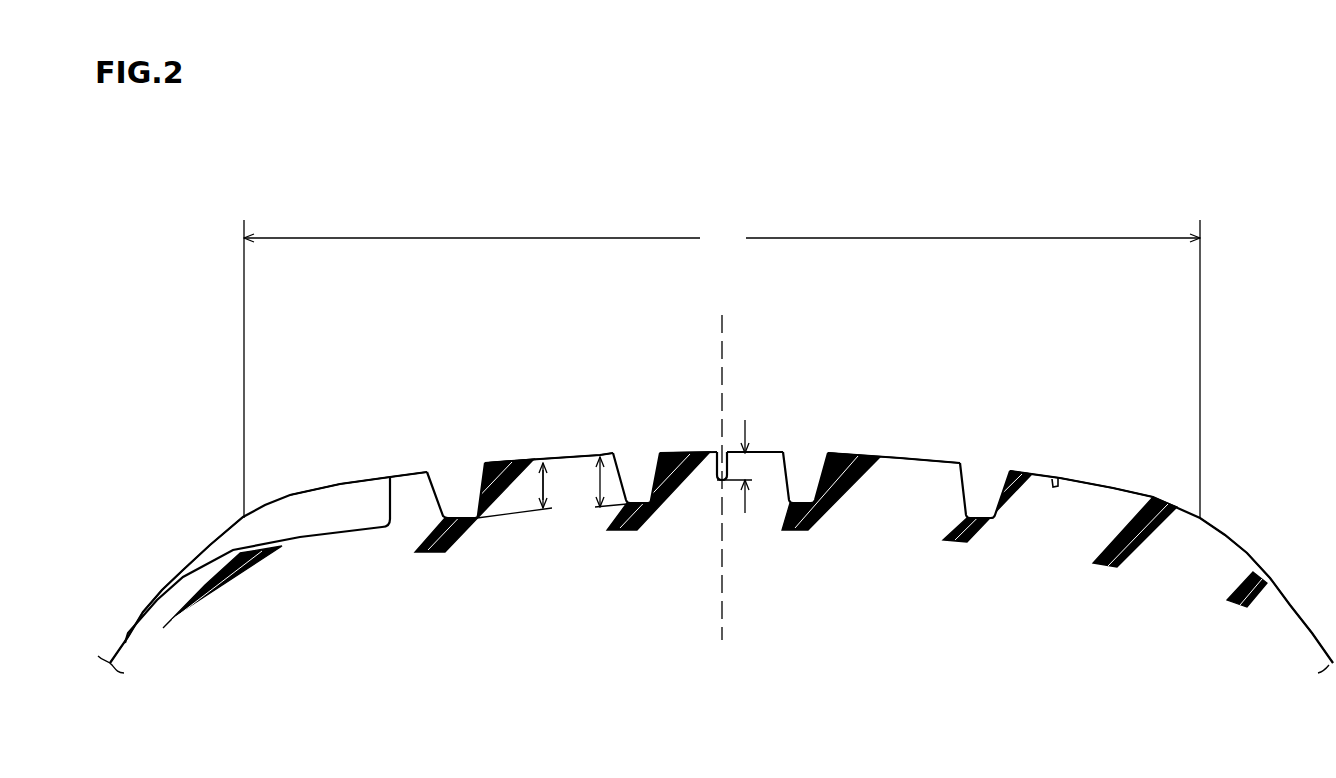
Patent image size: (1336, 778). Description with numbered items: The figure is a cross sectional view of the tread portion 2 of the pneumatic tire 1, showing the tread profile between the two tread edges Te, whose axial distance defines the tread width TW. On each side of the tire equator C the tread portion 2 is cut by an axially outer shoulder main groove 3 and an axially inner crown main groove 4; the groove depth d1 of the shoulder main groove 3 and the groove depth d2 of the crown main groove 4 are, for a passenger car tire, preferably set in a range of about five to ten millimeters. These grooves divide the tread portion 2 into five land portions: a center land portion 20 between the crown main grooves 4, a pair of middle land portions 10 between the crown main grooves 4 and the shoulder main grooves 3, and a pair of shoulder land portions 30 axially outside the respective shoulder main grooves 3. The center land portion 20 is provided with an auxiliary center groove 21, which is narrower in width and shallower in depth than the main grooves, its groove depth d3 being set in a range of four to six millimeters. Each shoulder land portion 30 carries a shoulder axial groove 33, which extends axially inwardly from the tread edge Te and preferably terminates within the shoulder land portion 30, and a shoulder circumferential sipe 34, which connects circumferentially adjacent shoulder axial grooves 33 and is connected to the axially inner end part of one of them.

The pneumatic tire 1 is at (715, 473).
The tread portion 2 is at (845, 450).
The shoulder main groove 3 is at (459, 497).
The crown main groove 4 is at (638, 478).
The middle land portion 10 is at (565, 452).
The center land portion 20 is at (699, 452).
The auxiliary center groove 21 is at (727, 455).
The shoulder land portion 30 is at (362, 478).
The shoulder axial groove 33 is at (310, 514).
The shoulder circumferential sipe 34 is at (1057, 478).
The groove depth of the shoulder main groove d1 is at (545, 478).
The groove depth of the crown main groove d2 is at (600, 480).
The groove depth of the auxiliary center groove d3 is at (748, 467).
The tread edge Te is at (245, 516).
The tread width TW is at (722, 369).
The tire equator C is at (723, 460).